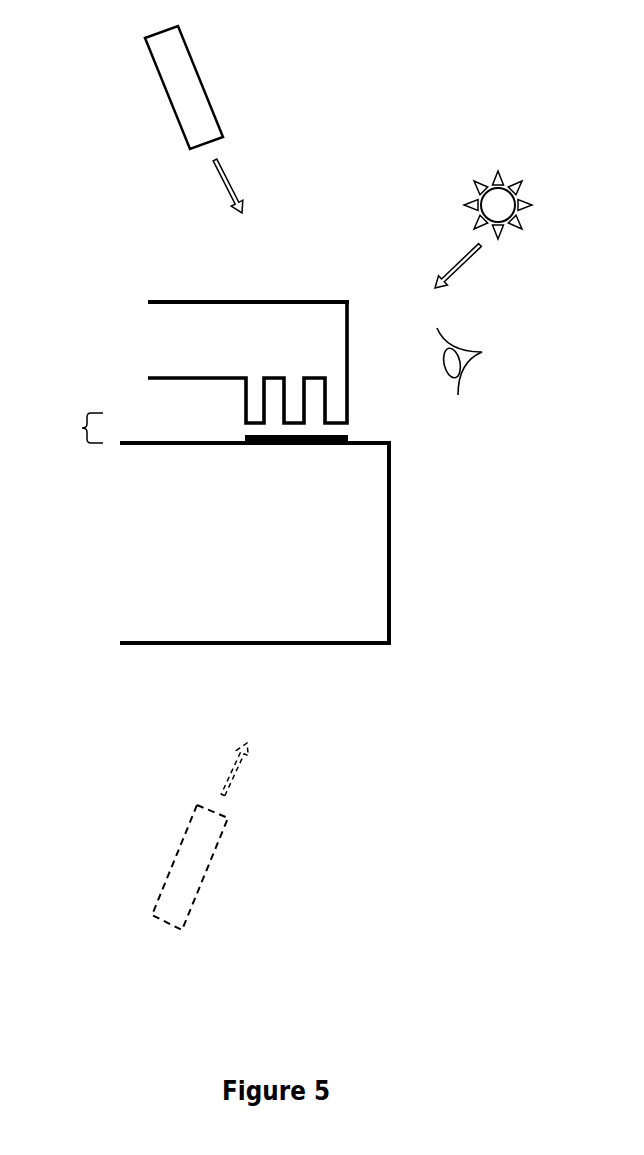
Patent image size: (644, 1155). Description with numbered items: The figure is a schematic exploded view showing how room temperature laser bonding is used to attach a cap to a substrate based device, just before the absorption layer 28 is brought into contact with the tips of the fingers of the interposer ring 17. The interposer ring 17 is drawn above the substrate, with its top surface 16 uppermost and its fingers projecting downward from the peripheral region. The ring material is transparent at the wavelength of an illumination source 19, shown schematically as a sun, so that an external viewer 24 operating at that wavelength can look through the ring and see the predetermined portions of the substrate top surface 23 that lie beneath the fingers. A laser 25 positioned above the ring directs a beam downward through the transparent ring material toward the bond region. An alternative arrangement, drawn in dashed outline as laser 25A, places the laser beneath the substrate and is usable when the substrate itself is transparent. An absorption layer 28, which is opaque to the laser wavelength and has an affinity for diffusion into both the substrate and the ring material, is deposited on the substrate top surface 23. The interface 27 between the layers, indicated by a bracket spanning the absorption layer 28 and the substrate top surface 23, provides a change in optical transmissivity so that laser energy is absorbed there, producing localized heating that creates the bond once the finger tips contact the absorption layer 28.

The top surface 16 is at (275, 302).
The interposer ring 17 is at (192, 322).
The illumination source 19 is at (493, 187).
The top surface 23 is at (203, 443).
The external viewer 24 is at (467, 368).
The laser 25 is at (157, 53).
The laser 25A is at (160, 900).
The interface 27 is at (82, 428).
The absorption layer 28 is at (347, 437).